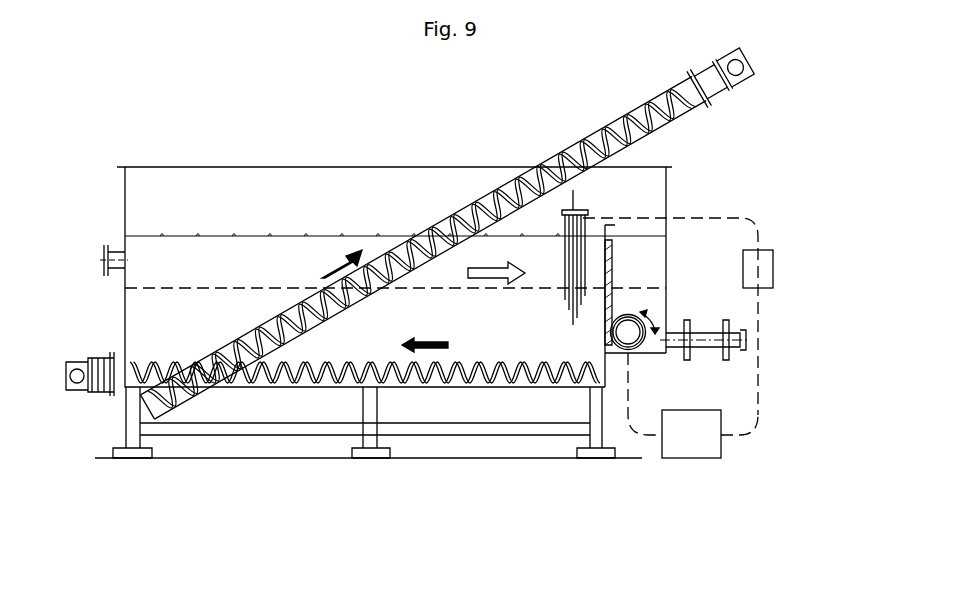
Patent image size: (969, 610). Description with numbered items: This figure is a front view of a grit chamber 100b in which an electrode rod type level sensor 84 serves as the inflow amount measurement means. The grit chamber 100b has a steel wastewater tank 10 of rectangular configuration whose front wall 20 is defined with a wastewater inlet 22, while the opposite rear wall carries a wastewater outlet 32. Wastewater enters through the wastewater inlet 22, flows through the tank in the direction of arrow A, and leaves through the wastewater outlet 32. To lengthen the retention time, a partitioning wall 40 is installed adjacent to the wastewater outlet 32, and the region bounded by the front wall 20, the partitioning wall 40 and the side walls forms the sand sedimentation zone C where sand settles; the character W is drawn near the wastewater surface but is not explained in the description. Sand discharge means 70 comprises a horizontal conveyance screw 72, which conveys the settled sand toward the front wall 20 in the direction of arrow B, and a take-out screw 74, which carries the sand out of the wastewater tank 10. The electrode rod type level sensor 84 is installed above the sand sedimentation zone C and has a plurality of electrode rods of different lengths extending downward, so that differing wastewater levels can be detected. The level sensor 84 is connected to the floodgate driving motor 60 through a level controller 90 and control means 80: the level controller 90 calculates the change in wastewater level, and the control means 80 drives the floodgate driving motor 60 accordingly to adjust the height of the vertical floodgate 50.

The grit chamber 100b is at (104, 75).
The wastewater tank 10 is at (124, 200).
The front wall 20 is at (124, 288).
The wastewater inlet 22 is at (104, 260).
The wastewater outlet 32 is at (670, 347).
The partitioning wall 40 is at (615, 233).
The vertical floodgate 50 is at (615, 282).
The floodgate driving motor 60 is at (630, 298).
The sand discharge means 70 is at (220, 531).
The horizontal conveyance screw 72 is at (317, 384).
The take-out screw 74 is at (183, 400).
The electrode rod type level sensor 84 is at (573, 180).
The control means 80 is at (680, 452).
The level controller 90 is at (765, 285).
The water surface W is at (302, 236).
The sand sedimentation zone C is at (220, 262).
The wastewater passage direction A is at (490, 282).
The sand conveyance direction B is at (432, 352).